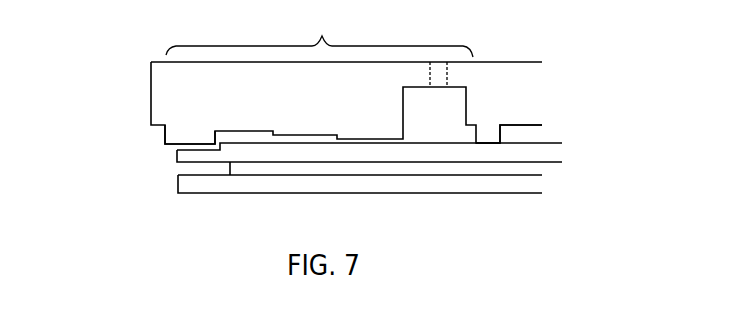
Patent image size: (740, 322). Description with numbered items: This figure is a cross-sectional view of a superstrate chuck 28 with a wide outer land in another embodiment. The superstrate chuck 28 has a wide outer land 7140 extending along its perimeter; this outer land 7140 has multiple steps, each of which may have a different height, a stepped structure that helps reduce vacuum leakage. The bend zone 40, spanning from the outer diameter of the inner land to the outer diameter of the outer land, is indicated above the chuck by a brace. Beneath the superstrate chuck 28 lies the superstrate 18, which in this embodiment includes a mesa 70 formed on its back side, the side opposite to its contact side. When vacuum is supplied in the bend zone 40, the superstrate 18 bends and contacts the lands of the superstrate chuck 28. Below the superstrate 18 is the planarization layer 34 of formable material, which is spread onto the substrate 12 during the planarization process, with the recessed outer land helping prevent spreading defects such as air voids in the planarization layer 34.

The superstrate chuck 28 is at (193, 80).
The bend zone 40 is at (319, 35).
The wide outer land 7140 is at (173, 134).
The mesa 70 is at (527, 143).
The superstrate 18 is at (528, 153).
The planarization layer 34 is at (528, 168).
The substrate 12 is at (178, 182).